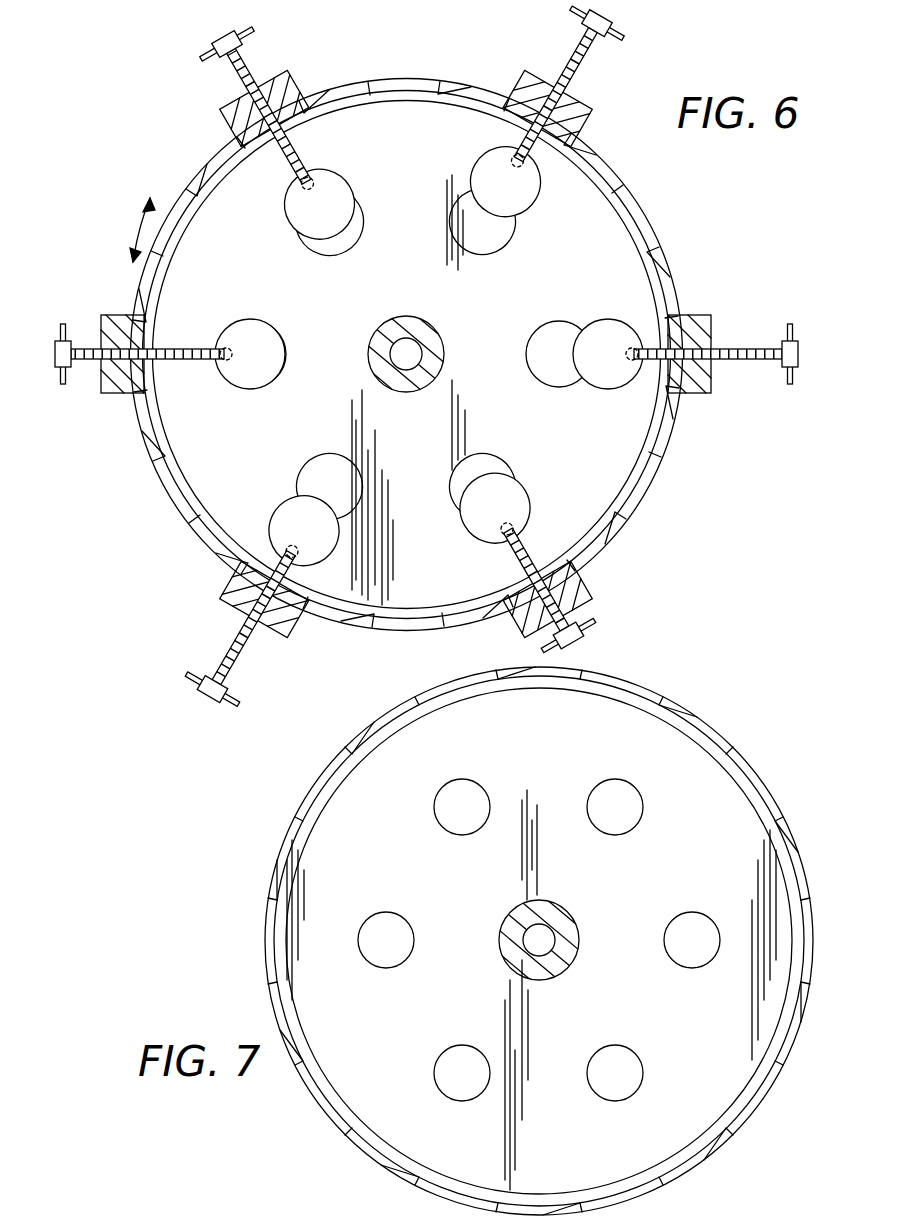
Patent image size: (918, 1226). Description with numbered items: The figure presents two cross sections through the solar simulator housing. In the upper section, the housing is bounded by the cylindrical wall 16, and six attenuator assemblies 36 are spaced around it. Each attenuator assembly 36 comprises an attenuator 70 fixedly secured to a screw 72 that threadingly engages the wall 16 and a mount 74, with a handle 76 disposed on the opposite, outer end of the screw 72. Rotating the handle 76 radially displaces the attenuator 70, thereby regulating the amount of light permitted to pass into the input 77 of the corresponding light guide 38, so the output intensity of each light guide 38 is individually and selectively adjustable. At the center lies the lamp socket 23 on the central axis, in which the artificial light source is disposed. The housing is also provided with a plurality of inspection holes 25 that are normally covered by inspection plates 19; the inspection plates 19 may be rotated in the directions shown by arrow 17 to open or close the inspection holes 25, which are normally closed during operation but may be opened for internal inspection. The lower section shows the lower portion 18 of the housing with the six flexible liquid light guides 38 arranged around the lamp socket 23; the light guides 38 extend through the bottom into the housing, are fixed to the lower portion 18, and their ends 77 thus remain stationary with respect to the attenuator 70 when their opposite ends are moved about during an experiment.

In FIG. 6, the cylindrical wall 16 is at (650, 261).
In FIG. 7, the cylindrical wall 16 is at (632, 699).
In FIG. 6, the arrow 17 is at (140, 222).
In FIG. 6, the lower portion 18 is at (632, 519).
In FIG. 7, the lower portion 18 is at (698, 746).
In FIG. 6, the inspection plates 19 is at (403, 80).
In FIG. 6, the lamp socket 23 is at (434, 327).
In FIG. 7, the lamp socket 23 is at (566, 905).
In FIG. 6, the inspection holes 25 is at (392, 100).
In FIG. 6, the attenuator assembly 36 is at (300, 186).
In FIG. 7, the flexible liquid light guide 38 is at (470, 783).
In FIG. 6, the attenuator 70 is at (338, 223).
In FIG. 6, the screw 72 is at (298, 153).
In FIG. 6, the mount 74 is at (288, 74).
In FIG. 6, the handle 76 is at (229, 38).
In FIG. 6, the input 77 is at (352, 244).